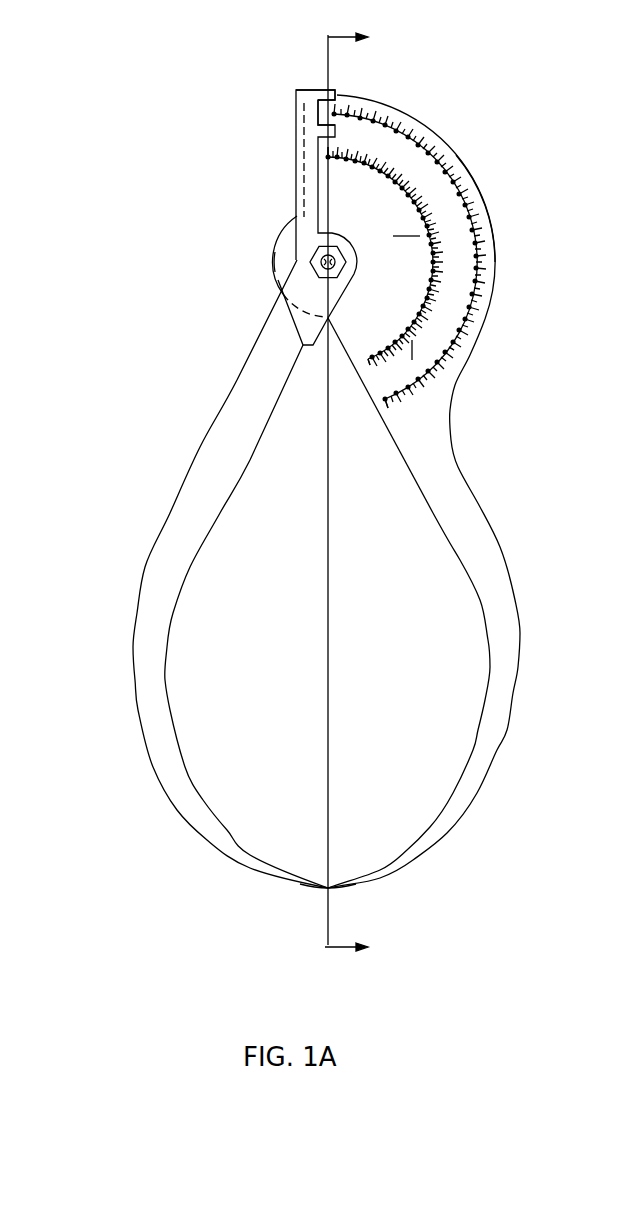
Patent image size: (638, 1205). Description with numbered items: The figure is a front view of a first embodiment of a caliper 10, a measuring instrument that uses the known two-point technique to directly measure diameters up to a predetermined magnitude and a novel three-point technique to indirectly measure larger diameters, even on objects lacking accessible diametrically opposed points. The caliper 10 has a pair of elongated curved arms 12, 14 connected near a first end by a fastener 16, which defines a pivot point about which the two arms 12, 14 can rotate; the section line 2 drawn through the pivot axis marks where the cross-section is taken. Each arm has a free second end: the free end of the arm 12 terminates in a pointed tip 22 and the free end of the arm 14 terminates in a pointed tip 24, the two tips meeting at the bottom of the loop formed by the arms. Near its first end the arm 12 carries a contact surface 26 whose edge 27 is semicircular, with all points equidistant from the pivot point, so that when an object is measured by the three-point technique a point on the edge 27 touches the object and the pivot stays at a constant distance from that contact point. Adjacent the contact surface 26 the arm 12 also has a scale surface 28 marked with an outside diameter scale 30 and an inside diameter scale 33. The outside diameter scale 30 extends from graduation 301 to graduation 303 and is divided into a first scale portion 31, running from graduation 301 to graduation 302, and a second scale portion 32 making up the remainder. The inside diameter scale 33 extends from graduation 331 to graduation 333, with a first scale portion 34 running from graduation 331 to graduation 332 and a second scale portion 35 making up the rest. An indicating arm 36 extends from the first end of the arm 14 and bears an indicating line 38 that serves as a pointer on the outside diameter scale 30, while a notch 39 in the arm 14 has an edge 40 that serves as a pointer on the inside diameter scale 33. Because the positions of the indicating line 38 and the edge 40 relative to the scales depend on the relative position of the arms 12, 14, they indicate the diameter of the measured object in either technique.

The section line 2- 2 is at (357, 495).
The caliper 10 is at (473, 153).
The arm 12 is at (517, 692).
The arm 14 is at (135, 682).
The fastener 16 is at (323, 258).
The pointed tip 22 is at (331, 887).
The pointed tip 24 is at (325, 887).
The contact surface 26 is at (288, 252).
The edge 27 is at (275, 265).
The scale surface 28 is at (493, 298).
The outside diameter scale 30 is at (472, 178).
The first scale portion 31 is at (398, 108).
The second scale portion 32 is at (457, 347).
The inside diameter scale 33 is at (445, 233).
The first scale portion 34 is at (412, 360).
The second scale portion 35 is at (393, 236).
The indicating arm 36 is at (295, 157).
The indicating line 38 is at (323, 91).
The notch 39 is at (310, 347).
The edge 40 is at (298, 367).
The graduation 301 is at (317, 103).
The graduation 302 is at (476, 238).
The graduation 303 is at (383, 410).
The graduation 331 is at (363, 365).
The graduation 332 is at (430, 253).
The graduation 333 is at (327, 153).